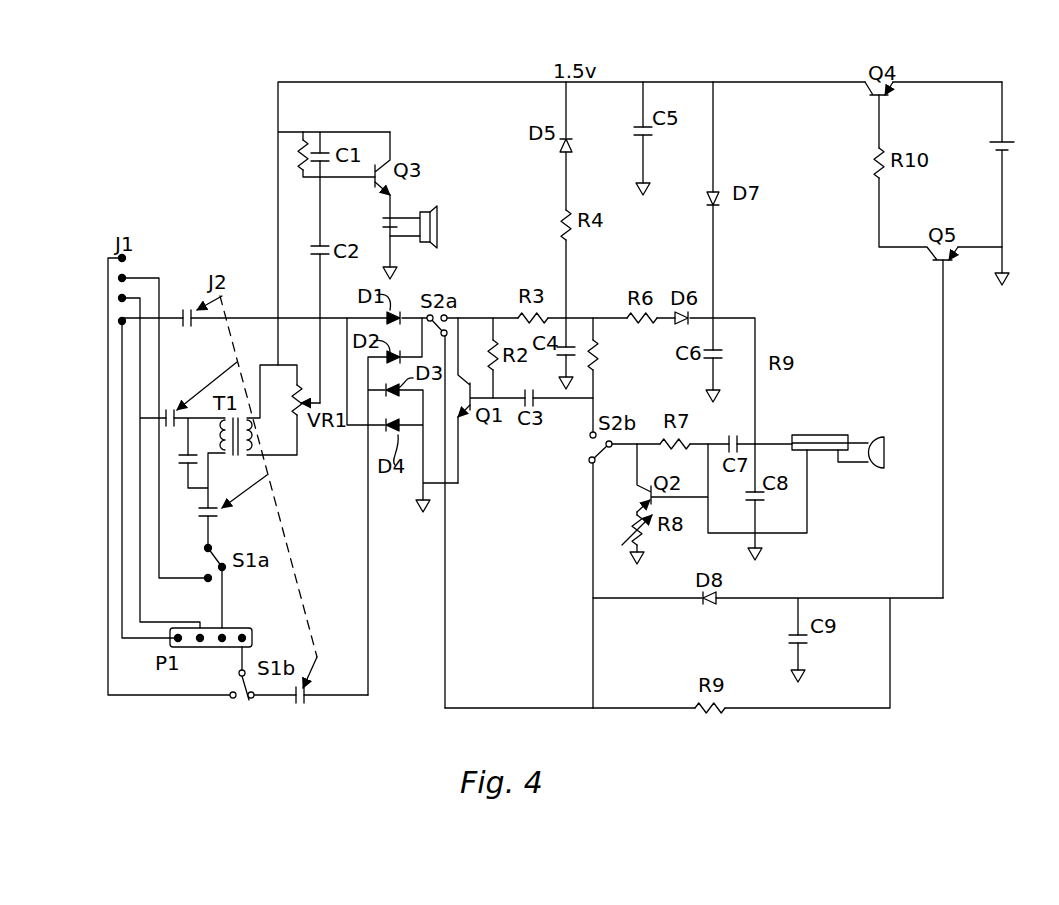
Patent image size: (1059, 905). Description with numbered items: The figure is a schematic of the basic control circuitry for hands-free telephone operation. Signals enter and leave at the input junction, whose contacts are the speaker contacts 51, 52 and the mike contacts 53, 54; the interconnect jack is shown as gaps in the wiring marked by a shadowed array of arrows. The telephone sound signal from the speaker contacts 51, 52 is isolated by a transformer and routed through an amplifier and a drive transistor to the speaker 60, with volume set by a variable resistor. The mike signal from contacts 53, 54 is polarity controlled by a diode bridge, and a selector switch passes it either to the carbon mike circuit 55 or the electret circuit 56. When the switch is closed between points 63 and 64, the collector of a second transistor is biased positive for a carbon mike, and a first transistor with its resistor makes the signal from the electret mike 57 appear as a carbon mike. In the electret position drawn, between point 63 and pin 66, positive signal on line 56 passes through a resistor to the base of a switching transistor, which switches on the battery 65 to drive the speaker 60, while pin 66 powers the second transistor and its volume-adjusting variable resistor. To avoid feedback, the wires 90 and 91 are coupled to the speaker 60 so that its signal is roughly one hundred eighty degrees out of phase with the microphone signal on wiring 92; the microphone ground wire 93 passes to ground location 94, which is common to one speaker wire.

The speaker contact 51 is at (137, 277).
The speaker contact 52 is at (135, 297).
The mike contact 53 is at (113, 254).
The mike contact 54 is at (135, 318).
The carbon mike circuit 55 is at (484, 312).
The electret circuit 56 is at (453, 575).
The electret mike 57 is at (882, 437).
The speaker 60 is at (437, 222).
The switch point 63 is at (610, 448).
The switch point 64 is at (590, 436).
The battery 65 is at (1010, 146).
The pin 66 is at (588, 461).
The speaker wire 90 is at (408, 217).
The speaker wire 91 is at (410, 238).
The microphone wiring 92 is at (777, 443).
The ground wire 93 is at (855, 463).
The ground location 94 is at (762, 550).